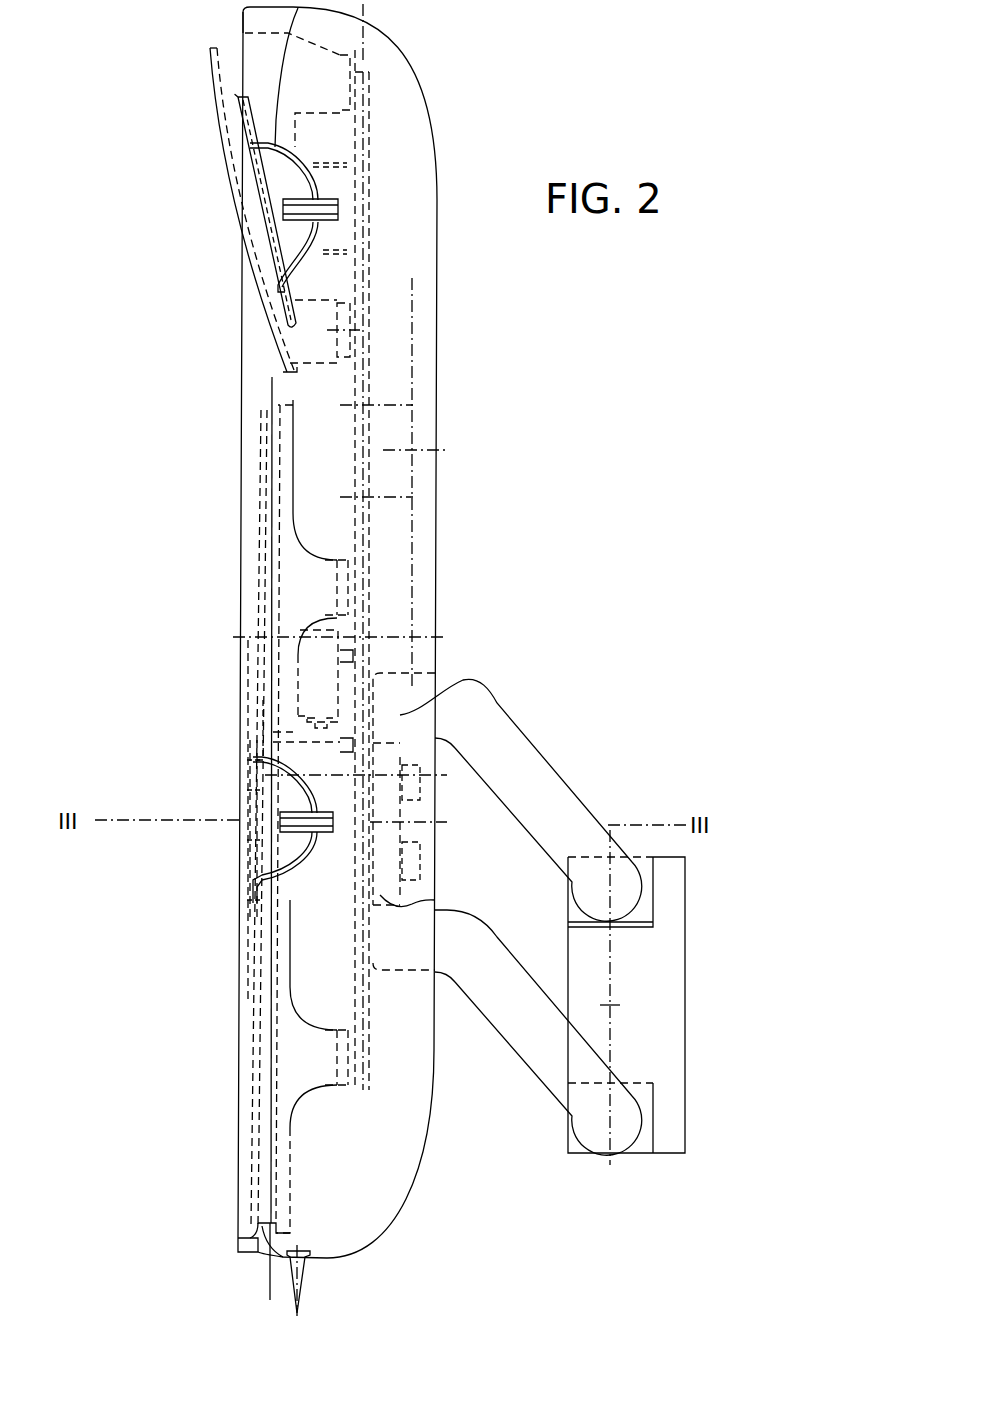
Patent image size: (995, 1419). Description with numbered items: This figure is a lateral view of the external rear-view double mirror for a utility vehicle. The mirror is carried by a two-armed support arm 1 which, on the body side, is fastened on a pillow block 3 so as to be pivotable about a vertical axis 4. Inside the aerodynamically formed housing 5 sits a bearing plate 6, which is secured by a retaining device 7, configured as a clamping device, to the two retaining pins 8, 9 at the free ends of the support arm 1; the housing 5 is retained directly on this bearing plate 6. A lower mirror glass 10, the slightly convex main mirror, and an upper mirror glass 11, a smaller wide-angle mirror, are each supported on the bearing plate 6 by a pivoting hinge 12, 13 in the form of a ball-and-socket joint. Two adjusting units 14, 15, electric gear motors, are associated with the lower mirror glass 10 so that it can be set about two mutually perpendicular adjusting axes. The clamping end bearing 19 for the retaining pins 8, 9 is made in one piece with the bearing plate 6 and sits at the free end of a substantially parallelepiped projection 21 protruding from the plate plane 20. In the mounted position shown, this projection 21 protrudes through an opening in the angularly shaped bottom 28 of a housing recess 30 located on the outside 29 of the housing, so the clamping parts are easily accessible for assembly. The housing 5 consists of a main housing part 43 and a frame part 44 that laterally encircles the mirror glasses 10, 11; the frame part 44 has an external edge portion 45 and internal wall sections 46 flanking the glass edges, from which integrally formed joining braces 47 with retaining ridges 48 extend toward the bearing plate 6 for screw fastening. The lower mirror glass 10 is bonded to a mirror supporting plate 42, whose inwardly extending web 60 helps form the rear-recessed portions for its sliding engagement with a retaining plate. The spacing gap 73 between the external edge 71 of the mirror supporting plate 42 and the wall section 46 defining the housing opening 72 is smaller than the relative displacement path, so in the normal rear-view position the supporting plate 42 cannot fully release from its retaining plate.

The two-armed support arm 1 is at (565, 772).
The pillow block 3 is at (665, 1005).
The vertical axis 4 is at (610, 952).
The housing 5 is at (440, 360).
The bearing plate 6 is at (365, 290).
The retaining device 7 is at (400, 808).
The retaining pin 8 is at (415, 779).
The retaining pin 9 is at (400, 877).
The lower mirror glass 10 is at (250, 872).
The upper mirror glass 11 is at (237, 207).
The pivoting hinge 12 is at (300, 875).
The pivoting hinge 13 is at (310, 255).
The adjusting unit 14 is at (322, 753).
The adjusting unit 15 is at (322, 668).
The clamping end bearing 19 is at (400, 834).
The plate plane 20 is at (363, 15).
The projection 21 is at (433, 898).
The bottom 28 is at (450, 680).
The outside of the housing 29 is at (440, 583).
The housing recess 30 is at (435, 856).
The mirror supporting plate 42 is at (270, 311).
The main housing part 43 is at (410, 1150).
The frame part 44 is at (242, 1147).
The external edge portion 45 is at (243, 12).
The internal wall section 46 is at (228, 35).
The joining brace 47 is at (333, 69).
The retaining ridge 48 is at (340, 97).
The web 60 is at (268, 278).
The external edge 71 is at (270, 420).
The housing opening 72 is at (258, 345).
The spacing gap 73 is at (265, 407).